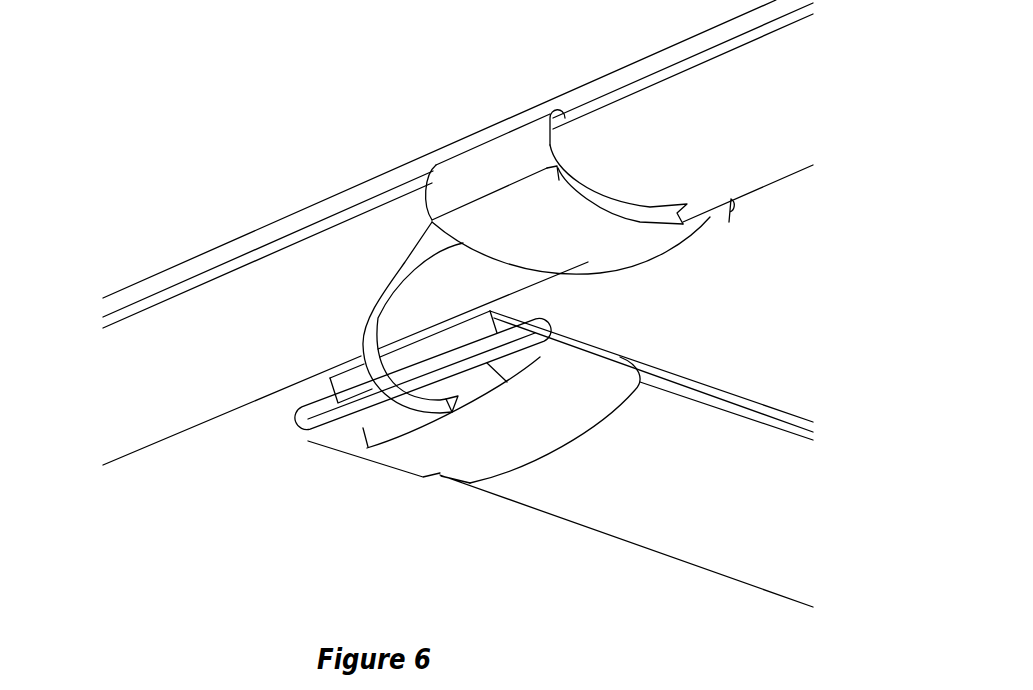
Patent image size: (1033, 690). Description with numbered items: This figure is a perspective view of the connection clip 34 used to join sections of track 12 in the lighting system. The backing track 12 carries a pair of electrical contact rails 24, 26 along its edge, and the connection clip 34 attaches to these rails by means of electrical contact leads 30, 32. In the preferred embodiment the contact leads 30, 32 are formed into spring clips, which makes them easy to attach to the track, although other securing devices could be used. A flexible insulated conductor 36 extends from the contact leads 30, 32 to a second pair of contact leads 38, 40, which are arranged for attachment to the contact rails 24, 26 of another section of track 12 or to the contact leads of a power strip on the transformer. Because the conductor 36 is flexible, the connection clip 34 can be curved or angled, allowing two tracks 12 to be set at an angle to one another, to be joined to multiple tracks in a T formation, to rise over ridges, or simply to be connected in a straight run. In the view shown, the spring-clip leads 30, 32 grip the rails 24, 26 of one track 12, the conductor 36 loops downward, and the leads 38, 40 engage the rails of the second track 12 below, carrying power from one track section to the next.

The track 12 is at (207, 241).
The electrical contact rail 24 is at (392, 188).
The electrical contact rail 26 is at (732, 393).
The electrical contact lead 30 is at (493, 133).
The electrical contact lead 32 is at (722, 221).
The connection clip 34 is at (283, 370).
The flexible insulated conductor 36 is at (369, 333).
The contact lead 38 is at (592, 356).
The contact lead 40 is at (327, 452).